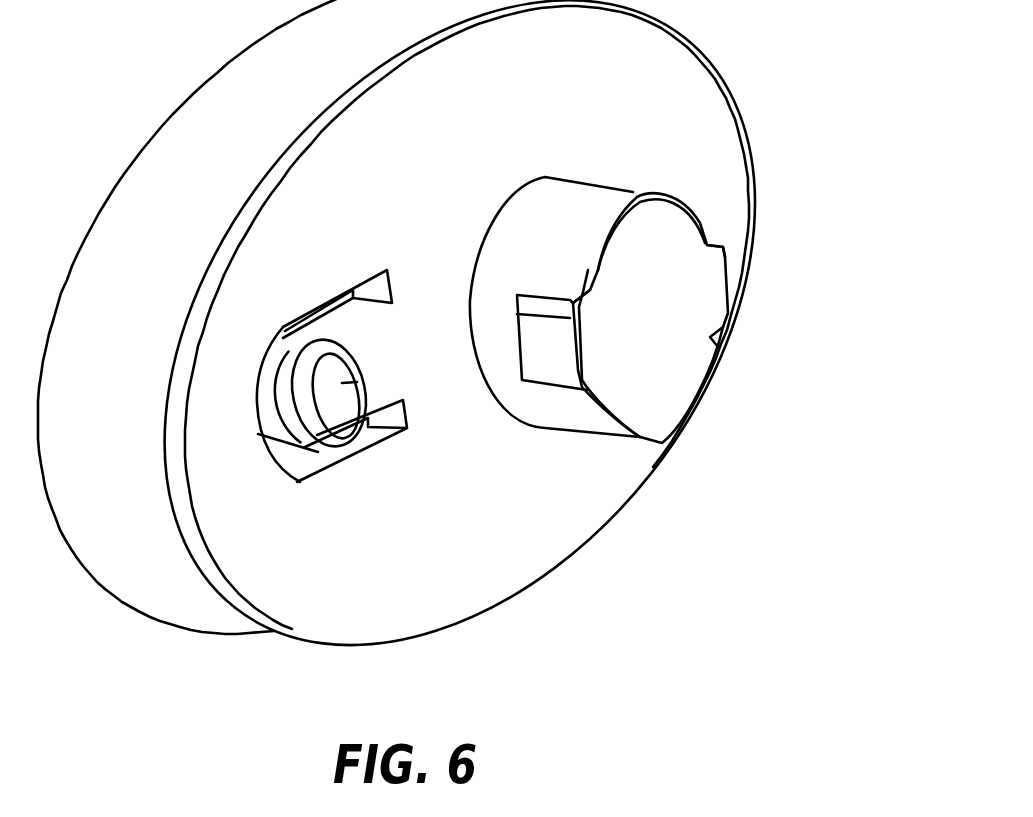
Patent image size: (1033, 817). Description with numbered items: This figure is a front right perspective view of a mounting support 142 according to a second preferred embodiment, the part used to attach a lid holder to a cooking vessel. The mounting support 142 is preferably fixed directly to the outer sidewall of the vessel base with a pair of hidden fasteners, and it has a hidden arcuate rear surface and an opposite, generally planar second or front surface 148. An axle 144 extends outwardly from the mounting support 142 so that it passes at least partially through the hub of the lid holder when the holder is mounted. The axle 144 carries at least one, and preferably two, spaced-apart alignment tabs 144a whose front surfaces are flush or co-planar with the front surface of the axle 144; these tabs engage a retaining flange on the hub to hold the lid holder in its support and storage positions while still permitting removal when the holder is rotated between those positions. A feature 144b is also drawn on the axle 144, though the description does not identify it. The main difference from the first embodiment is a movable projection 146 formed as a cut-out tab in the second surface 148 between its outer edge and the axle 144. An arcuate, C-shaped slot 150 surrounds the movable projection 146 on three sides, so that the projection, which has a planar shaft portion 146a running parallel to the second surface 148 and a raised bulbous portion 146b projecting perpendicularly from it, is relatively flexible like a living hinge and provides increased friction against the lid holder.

The mounting support 142 is at (283, 237).
The axle 144 is at (578, 203).
The alignment tab 144a is at (728, 280).
The boss slot 144b is at (493, 350).
The movable projection 146 is at (383, 352).
The shaft portion 146a is at (387, 378).
The bulbous portion 146b is at (333, 307).
The second surface 148 is at (367, 612).
The slot 150 is at (367, 440).